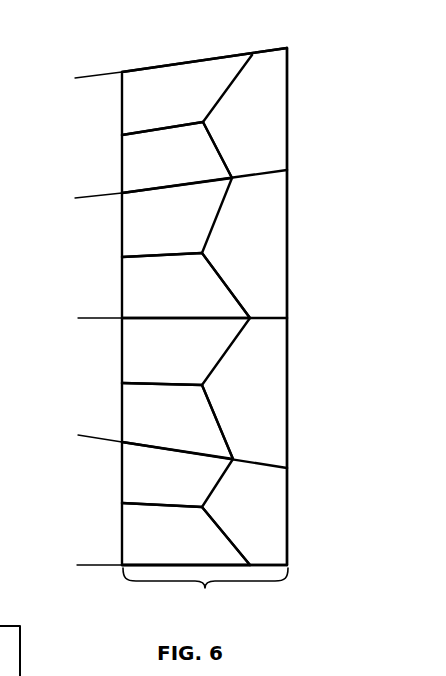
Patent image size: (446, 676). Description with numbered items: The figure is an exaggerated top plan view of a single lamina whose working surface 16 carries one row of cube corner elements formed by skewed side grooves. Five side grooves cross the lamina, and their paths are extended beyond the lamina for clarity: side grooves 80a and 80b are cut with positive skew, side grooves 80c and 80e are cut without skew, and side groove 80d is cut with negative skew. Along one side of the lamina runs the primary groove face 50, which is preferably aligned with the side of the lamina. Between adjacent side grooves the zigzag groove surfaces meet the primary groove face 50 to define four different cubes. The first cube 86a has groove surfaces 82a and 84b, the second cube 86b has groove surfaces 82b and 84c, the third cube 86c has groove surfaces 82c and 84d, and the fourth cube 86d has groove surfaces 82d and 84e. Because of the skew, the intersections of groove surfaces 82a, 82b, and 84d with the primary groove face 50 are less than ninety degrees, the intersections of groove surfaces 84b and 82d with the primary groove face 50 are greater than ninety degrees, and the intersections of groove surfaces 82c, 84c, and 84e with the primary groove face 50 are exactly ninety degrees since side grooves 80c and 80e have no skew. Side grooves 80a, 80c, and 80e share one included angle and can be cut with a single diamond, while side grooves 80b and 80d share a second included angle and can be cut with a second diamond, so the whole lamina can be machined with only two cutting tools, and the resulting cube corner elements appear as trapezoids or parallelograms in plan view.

The primary groove face 50 is at (287, 47).
The working surface 16 is at (205, 592).
The side groove 80a is at (90, 80).
The side groove 80b is at (90, 199).
The side groove 80c is at (90, 321).
The side groove 80d is at (90, 441).
The side groove 80e is at (92, 568).
The groove surface 82a is at (162, 112).
The groove surface 82b is at (162, 233).
The groove surface 82c is at (162, 363).
The groove surface 82d is at (162, 488).
The groove surface 84b is at (177, 157).
The groove surface 84c is at (186, 285).
The groove surface 84d is at (177, 421).
The groove surface 84e is at (186, 534).
The first cube 86a is at (288, 107).
The second cube 86b is at (288, 235).
The third cube 86c is at (288, 388).
The fourth cube 86d is at (288, 515).